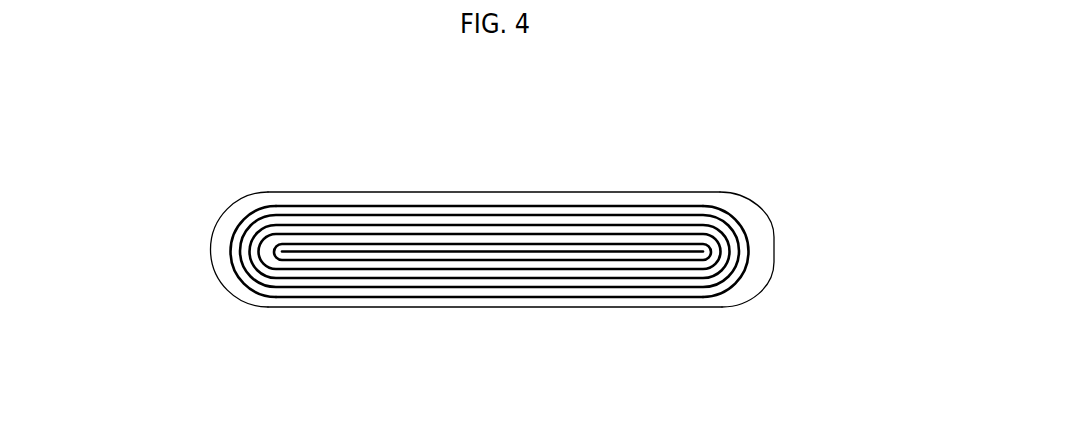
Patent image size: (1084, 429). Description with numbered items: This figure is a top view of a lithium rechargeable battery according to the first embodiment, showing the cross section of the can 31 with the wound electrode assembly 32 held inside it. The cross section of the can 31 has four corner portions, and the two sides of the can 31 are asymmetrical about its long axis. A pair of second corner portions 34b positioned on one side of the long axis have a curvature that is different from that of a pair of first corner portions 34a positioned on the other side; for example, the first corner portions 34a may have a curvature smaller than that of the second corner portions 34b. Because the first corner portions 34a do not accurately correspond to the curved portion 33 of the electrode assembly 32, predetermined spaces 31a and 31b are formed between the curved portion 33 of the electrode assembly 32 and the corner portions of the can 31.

The can 31 is at (763, 230).
The space 31a is at (233, 282).
The space 31b is at (742, 288).
The electrode assembly 32 is at (743, 252).
The curved portion 33 is at (752, 285).
The first corner portion 34a is at (727, 300).
The second corner portion 34b is at (735, 198).